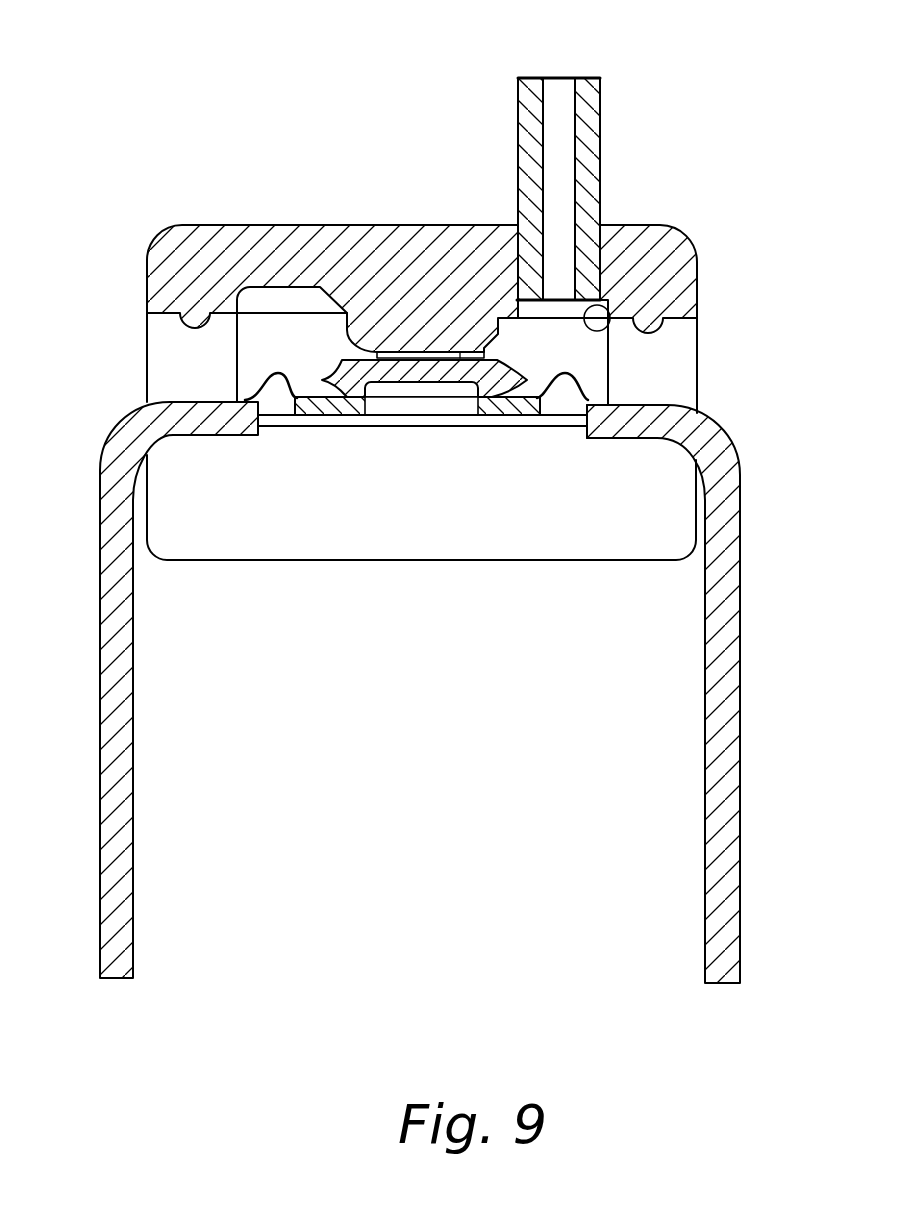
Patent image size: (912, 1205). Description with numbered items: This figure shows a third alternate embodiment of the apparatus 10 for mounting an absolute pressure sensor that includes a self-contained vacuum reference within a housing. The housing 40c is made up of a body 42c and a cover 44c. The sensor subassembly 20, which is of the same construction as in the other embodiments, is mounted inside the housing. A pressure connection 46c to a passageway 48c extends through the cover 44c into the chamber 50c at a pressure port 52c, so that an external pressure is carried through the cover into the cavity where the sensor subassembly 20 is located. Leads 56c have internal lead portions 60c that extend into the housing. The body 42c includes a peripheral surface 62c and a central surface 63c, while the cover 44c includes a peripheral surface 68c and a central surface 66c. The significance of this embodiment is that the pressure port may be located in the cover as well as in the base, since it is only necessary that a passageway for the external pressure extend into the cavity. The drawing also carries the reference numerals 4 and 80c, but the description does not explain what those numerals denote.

The housing 40c is at (562, 251).
The cover 44c is at (693, 209).
The pressure connection 46c is at (603, 92).
The passageway 48c is at (557, 88).
The terminal wall 4 is at (603, 148).
The peripheral surface 62c is at (165, 313).
The peripheral surface 68c is at (688, 321).
The pressure port 52c is at (585, 323).
The chamber 50c is at (597, 375).
The sensor subassembly 20 is at (520, 367).
The central surface 66c is at (375, 352).
The conductive layer 80c is at (478, 356).
The apparatus 10 is at (392, 448).
The central surface 63c is at (316, 424).
The leads 56c is at (727, 437).
The internal lead portions 60c is at (608, 441).
The body 42c is at (555, 562).